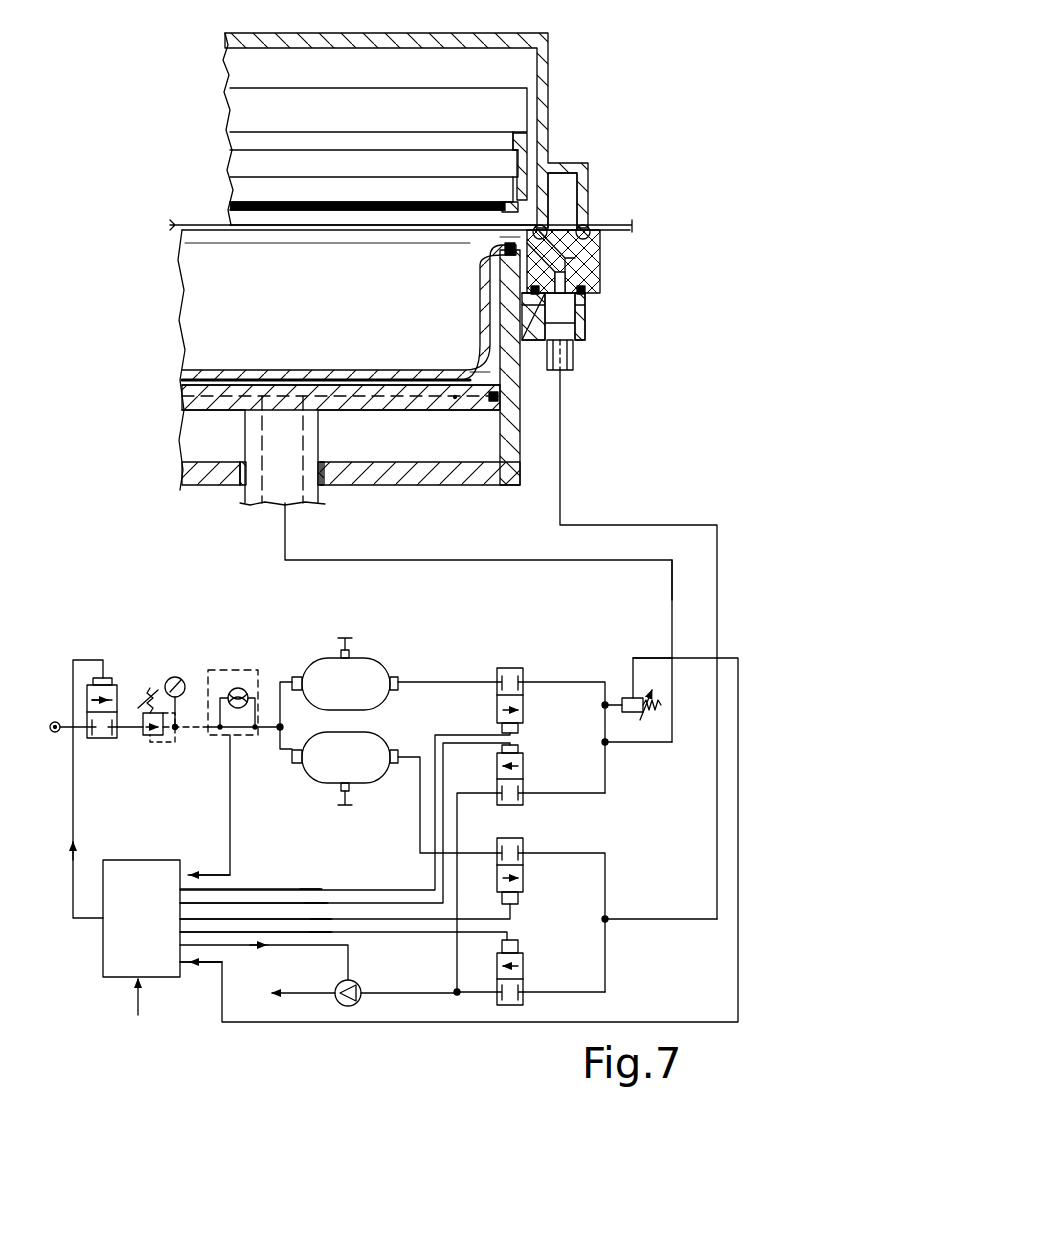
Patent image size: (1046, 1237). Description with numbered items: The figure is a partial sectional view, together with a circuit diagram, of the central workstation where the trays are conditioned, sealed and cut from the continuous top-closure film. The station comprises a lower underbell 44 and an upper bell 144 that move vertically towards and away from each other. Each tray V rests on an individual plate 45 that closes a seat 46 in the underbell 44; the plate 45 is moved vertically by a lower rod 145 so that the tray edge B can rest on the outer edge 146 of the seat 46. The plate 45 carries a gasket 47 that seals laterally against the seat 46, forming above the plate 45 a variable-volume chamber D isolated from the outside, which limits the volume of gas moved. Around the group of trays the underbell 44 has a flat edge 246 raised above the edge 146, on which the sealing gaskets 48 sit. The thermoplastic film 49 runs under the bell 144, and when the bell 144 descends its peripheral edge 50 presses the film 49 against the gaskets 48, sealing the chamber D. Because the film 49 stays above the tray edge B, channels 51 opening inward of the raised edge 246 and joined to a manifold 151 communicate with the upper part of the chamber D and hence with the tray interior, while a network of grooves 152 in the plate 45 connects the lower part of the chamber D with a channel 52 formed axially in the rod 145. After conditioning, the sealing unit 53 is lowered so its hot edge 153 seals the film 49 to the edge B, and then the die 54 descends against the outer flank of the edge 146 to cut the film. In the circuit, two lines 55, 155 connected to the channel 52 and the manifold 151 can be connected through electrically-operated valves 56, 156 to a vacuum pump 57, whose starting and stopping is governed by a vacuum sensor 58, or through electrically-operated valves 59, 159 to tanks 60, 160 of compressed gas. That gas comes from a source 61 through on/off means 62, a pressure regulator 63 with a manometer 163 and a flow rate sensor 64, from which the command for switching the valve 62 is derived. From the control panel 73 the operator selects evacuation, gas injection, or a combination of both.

The upper bell 144 is at (562, 62).
The sealing unit 53 is at (350, 180).
The die 54 is at (530, 135).
The hot edge 153 is at (508, 203).
The peripheral edge 50 is at (584, 194).
The thermoplastic film 49 is at (633, 225).
The lower underbell 44 is at (188, 490).
The tray V is at (232, 372).
The seat 46 is at (490, 352).
The outer edge of seat 146 is at (505, 272).
The tray edge B is at (515, 237).
The plate 45 is at (358, 403).
The channel 52 is at (303, 493).
The rod 145 is at (255, 493).
The grooves 152 is at (455, 397).
The gasket 47 is at (497, 399).
The variable-volume chamber D is at (495, 375).
The sealing gasket 48 is at (604, 250).
The flat edge 246 is at (600, 236).
The channel 51 is at (566, 292).
The manifold 151 is at (558, 318).
The line 55 is at (672, 596).
The gas source 61 is at (52, 733).
The on/off means 62 is at (100, 740).
The pressure regulator 63 is at (164, 742).
The manometer 163 is at (172, 677).
The flow rate sensor 64 is at (232, 670).
The tank 60 is at (378, 656).
The tank 160 is at (393, 733).
The electrically-operated valve 59 is at (511, 668).
The electrically-operated valve 56 is at (524, 765).
The vacuum sensor 58 is at (632, 712).
The electrically-operated valve 159 is at (524, 840).
The line 155 is at (653, 917).
The electrically-operated valve 156 is at (524, 986).
The control panel 73 is at (217, 937).
The vacuum pump 57 is at (359, 984).